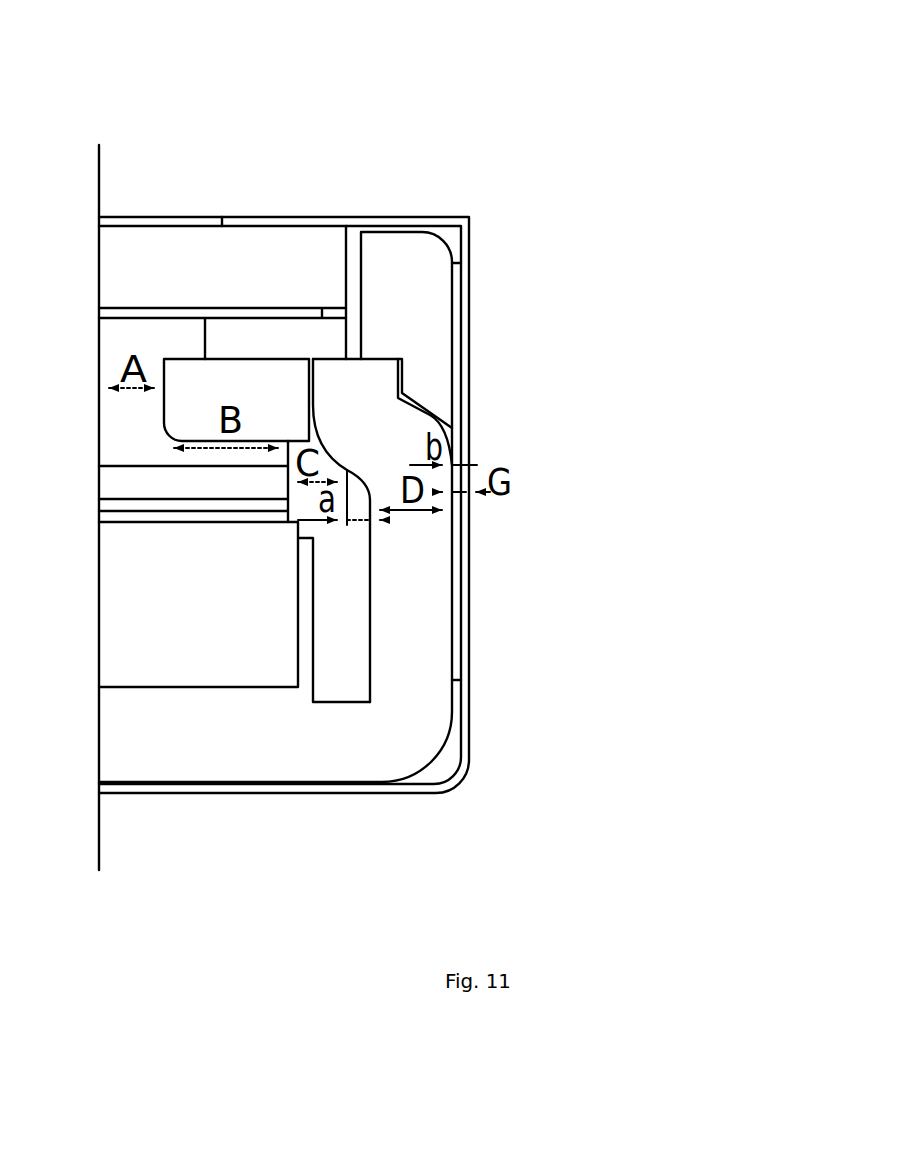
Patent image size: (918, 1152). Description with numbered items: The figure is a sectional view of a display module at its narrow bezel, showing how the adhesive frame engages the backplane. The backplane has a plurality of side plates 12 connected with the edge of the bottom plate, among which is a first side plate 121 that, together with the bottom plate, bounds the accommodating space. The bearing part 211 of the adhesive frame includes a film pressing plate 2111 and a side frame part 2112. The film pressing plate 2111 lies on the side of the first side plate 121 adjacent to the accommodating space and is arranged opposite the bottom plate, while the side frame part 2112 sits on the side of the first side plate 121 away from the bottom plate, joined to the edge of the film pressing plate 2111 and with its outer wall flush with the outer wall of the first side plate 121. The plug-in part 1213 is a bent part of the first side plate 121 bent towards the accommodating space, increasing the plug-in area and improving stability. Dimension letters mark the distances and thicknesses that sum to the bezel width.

The bearing part 211 is at (275, 351).
The film pressing plate 2111 is at (267, 393).
The side frame part 2112 is at (397, 345).
The plug-in part 1213 is at (363, 400).
The side plate 12 is at (464, 505).
The first side plate 121 is at (387, 668).